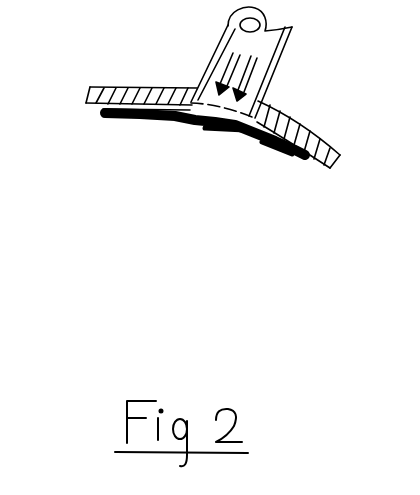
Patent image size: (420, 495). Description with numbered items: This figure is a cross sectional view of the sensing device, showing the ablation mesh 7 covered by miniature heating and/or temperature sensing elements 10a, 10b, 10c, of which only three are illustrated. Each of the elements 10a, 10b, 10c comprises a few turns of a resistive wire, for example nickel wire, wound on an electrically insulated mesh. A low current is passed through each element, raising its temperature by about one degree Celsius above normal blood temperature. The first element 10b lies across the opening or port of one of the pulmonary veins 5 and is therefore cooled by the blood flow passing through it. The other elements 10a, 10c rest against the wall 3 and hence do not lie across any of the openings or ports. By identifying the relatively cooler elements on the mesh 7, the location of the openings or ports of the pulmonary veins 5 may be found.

The wall 3 is at (313, 128).
The pulmonary vein 5 is at (278, 42).
The ablation mesh 7 is at (113, 120).
The heating and/or temperature sensing element 10a is at (150, 120).
The first heating and/or temperature sensing element 10b is at (233, 130).
The heating and/or temperature sensing element 10c is at (293, 142).